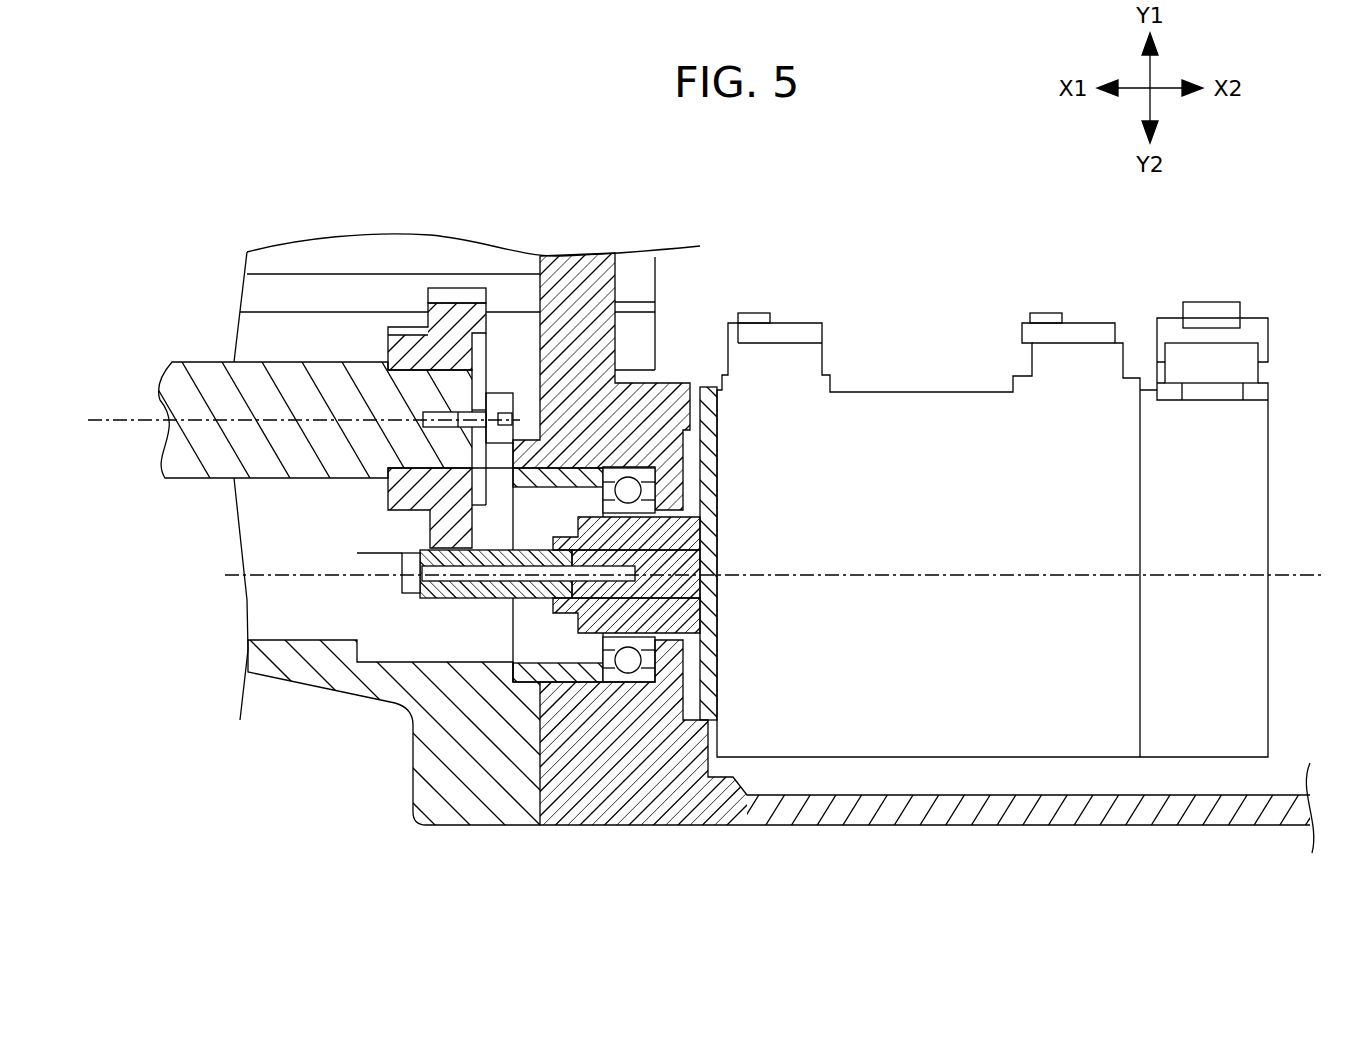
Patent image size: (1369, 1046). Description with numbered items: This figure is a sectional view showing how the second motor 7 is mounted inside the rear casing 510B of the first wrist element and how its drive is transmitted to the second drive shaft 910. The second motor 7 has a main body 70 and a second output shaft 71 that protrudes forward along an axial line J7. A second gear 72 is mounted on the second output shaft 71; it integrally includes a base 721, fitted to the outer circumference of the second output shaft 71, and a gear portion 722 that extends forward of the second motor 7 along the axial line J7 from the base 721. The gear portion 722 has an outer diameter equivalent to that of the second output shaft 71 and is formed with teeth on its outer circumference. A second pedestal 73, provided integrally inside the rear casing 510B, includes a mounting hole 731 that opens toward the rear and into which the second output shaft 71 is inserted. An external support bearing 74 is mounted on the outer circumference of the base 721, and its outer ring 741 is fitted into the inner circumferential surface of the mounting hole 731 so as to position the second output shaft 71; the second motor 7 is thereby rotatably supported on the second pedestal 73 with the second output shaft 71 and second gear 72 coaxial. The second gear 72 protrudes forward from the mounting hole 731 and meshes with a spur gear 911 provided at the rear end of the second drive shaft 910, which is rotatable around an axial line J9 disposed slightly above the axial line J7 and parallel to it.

The second motor 7 is at (992, 592).
The main body 70 is at (1100, 758).
The second output shaft 71 is at (659, 556).
The second gear 72 is at (488, 684).
The base 721 is at (572, 602).
The gear portion 722 is at (483, 600).
The second pedestal 73 is at (663, 390).
The mounting hole 731 is at (685, 657).
The external support bearing 74 is at (594, 650).
The outer ring 741 is at (616, 678).
The second drive shaft 910 is at (300, 382).
The spur gear 911 is at (457, 296).
The rear casing 510B is at (978, 828).
The axial line J7 is at (789, 575).
The axial line J9 is at (287, 420).